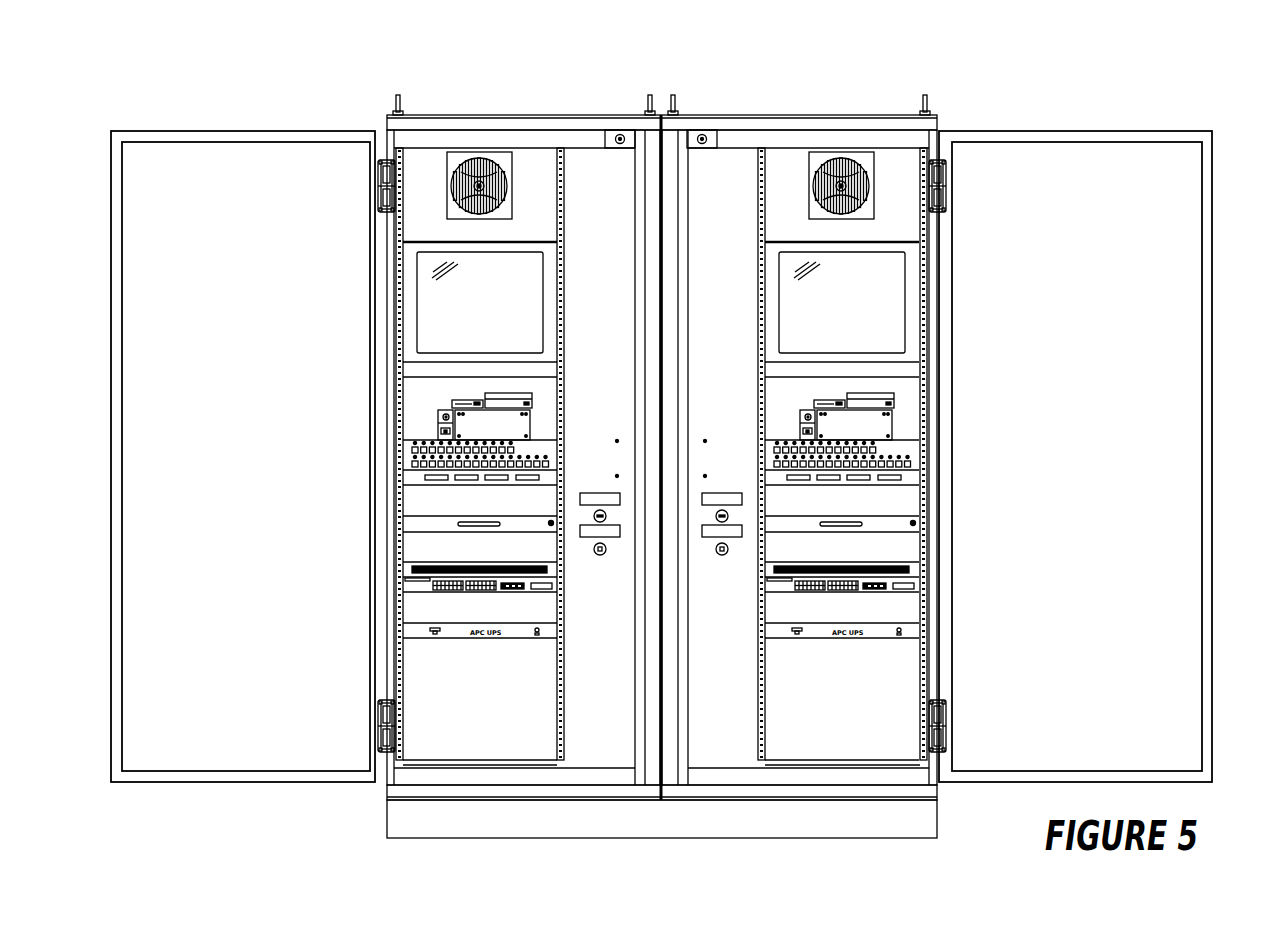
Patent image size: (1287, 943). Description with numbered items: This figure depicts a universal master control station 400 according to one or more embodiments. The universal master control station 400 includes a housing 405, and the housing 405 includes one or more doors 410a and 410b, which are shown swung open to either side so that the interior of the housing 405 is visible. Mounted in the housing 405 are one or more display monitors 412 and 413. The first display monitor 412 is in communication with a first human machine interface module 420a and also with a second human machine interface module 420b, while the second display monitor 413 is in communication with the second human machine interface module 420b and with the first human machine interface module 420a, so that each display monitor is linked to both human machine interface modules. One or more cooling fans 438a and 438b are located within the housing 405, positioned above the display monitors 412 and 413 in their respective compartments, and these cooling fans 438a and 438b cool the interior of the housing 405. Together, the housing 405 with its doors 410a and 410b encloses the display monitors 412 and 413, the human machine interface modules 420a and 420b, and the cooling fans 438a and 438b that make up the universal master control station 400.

The universal master control station 400 is at (953, 83).
The housing 405 is at (387, 115).
The door 410a is at (250, 130).
The door 410b is at (1074, 130).
The first display monitor 412 is at (433, 302).
The second display monitor 413 is at (890, 302).
The first human machine interface module 420a is at (437, 424).
The second human machine interface module 420b is at (892, 425).
The cooling fan 438a is at (500, 156).
The cooling fan 438b is at (838, 156).